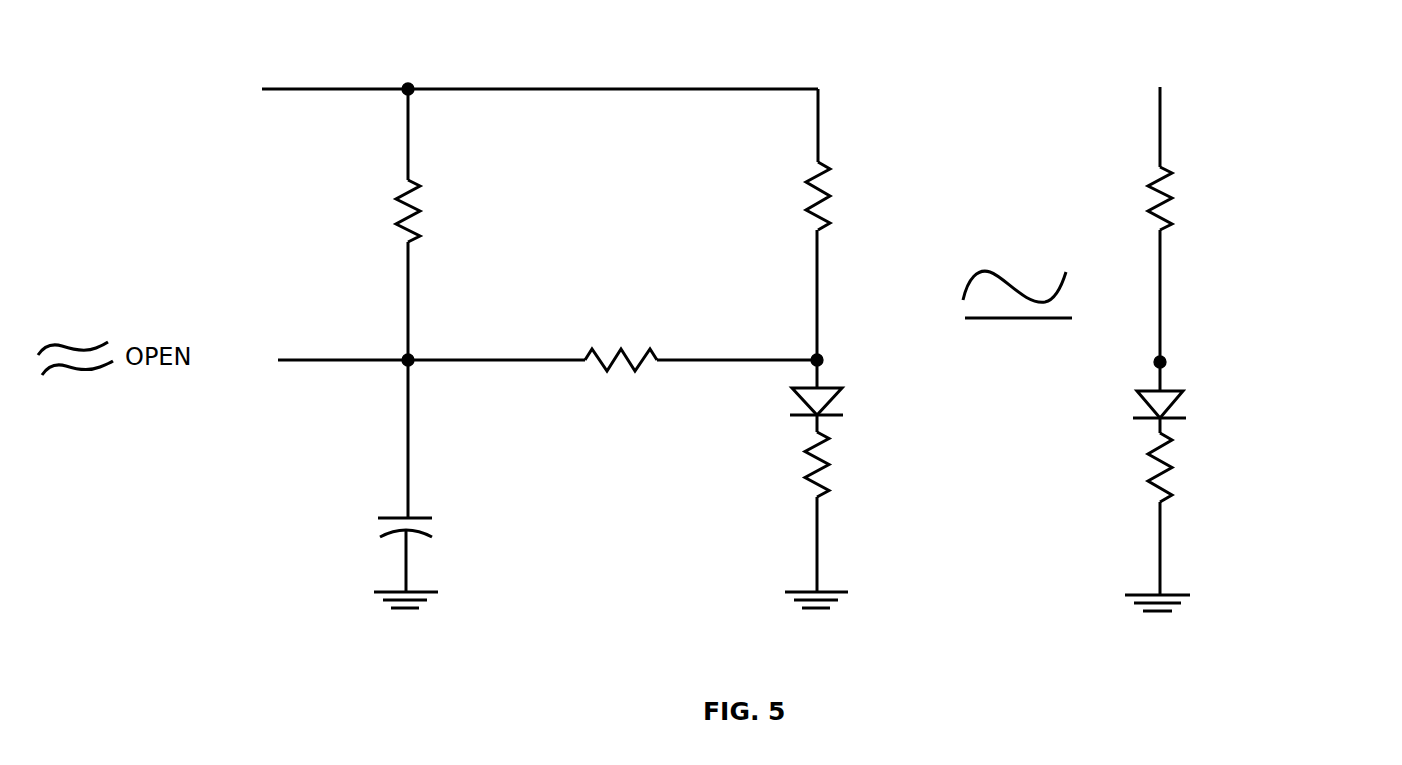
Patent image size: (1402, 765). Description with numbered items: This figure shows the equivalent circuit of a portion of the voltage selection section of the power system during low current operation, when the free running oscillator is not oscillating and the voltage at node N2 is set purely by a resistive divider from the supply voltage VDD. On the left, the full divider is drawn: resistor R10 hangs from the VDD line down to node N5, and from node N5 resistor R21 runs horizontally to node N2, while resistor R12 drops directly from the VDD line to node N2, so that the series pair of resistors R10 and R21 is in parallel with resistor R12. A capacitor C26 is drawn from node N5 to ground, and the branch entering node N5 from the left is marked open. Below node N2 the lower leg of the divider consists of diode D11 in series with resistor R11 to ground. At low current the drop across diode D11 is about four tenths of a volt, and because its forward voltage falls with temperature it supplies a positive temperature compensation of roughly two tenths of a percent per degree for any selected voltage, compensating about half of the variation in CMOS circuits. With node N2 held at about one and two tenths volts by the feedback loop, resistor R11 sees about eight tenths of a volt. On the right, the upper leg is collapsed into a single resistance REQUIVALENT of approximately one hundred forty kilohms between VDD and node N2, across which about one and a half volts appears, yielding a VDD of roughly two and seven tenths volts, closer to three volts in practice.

The supply voltage VDD is at (716, 62).
The resistor R10 is at (440, 211).
The resistor R12 is at (853, 196).
The resistor R21 is at (621, 339).
The resistor R11 is at (962, 467).
The diode D11 is at (963, 397).
The capacitor C26 is at (376, 526).
The node N5 is at (413, 356).
The node N2 is at (823, 358).
The equivalent resistance REQUIVALENT is at (1257, 198).